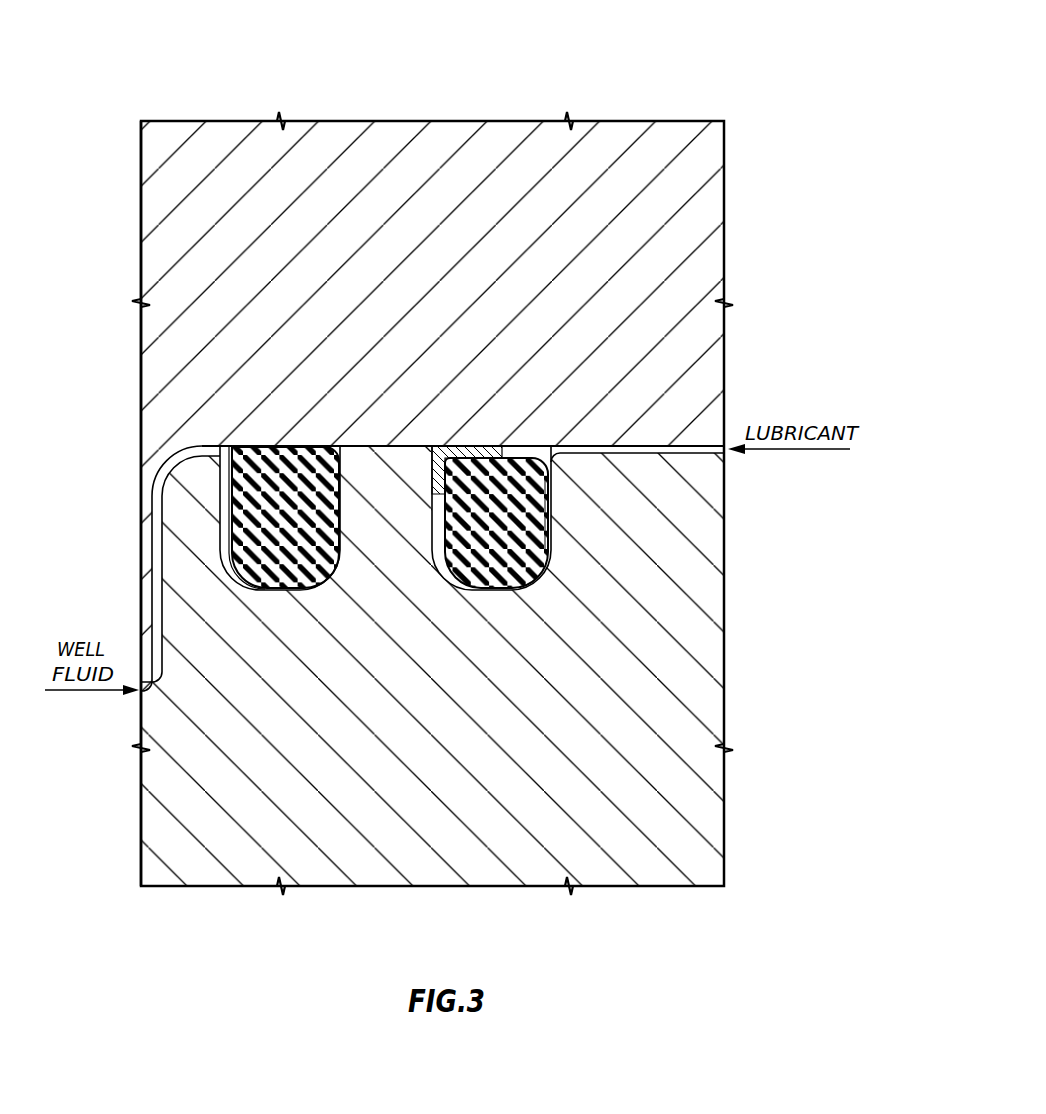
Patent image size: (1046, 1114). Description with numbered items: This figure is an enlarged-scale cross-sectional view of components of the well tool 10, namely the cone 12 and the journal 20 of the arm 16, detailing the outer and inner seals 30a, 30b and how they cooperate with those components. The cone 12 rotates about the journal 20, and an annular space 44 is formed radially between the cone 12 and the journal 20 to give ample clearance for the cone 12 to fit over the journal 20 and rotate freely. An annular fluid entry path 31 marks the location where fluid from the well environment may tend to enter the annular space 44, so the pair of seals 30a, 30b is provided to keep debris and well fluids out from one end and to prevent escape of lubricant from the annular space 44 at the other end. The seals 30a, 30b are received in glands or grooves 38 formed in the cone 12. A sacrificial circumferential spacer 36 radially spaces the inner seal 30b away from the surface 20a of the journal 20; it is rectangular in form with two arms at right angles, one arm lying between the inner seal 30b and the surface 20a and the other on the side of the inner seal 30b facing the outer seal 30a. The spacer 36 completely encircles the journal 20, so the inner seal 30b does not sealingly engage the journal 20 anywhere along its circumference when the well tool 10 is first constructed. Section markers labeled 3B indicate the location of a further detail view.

The well tool 10 is at (155, 70).
The cone 12 is at (332, 888).
The arm 16 is at (130, 200).
The journal 20 is at (508, 118).
The surface of the journal 20a is at (603, 446).
The outer seal 30a is at (287, 590).
The inner seal 30b is at (497, 592).
The annular fluid entry path 31 is at (155, 566).
The circumferential spacer 36 is at (448, 446).
The grooves 38 is at (222, 535).
The annular space 44 is at (701, 450).
The section line 3B is at (488, 272).